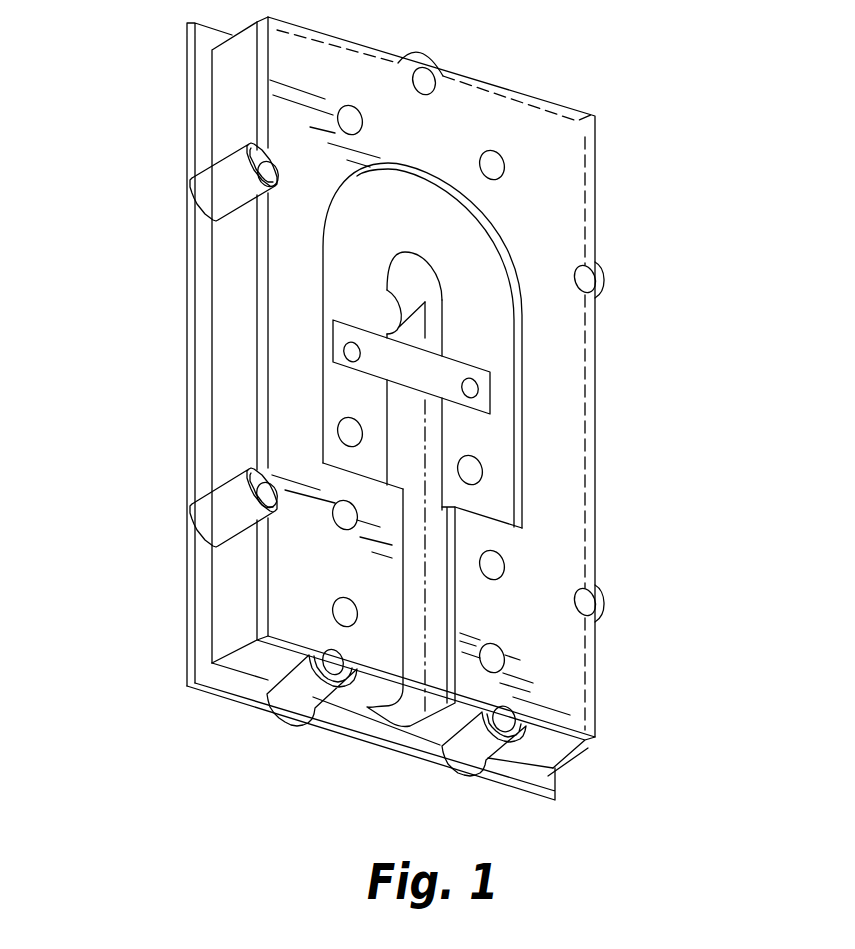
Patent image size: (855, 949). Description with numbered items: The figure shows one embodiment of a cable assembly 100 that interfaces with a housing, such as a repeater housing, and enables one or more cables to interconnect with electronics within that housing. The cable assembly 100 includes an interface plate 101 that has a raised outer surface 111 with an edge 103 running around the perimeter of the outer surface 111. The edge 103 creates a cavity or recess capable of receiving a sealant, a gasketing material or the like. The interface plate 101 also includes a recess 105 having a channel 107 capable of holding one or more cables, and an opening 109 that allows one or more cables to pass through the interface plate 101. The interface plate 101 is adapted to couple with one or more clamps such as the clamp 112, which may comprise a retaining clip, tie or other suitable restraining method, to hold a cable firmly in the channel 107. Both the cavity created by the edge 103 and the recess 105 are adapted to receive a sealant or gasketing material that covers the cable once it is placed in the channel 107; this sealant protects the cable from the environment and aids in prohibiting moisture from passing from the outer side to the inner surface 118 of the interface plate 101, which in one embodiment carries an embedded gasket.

The cable assembly 100 is at (127, 757).
The interface plate 101 is at (186, 326).
The edge 103 is at (597, 147).
The recess 105 is at (497, 487).
The channel 107 is at (402, 707).
The opening 109 is at (402, 300).
The raised outer surface 111 is at (232, 650).
The clamp 112 is at (497, 382).
The inner surface 118 is at (219, 698).